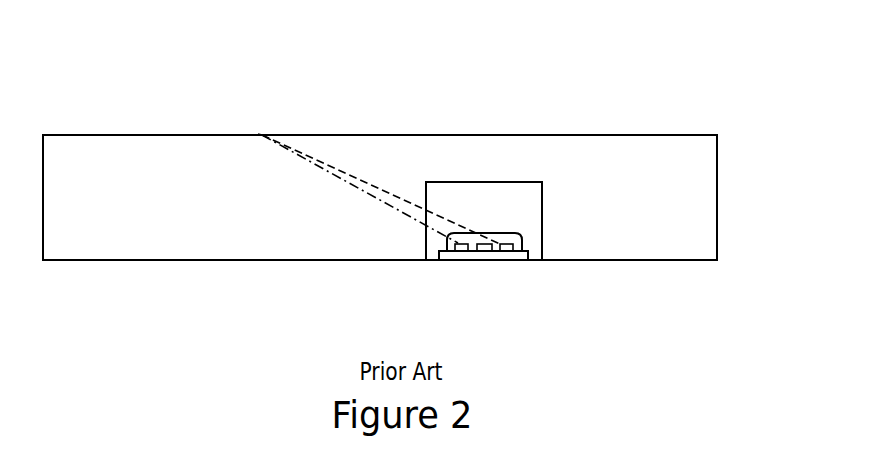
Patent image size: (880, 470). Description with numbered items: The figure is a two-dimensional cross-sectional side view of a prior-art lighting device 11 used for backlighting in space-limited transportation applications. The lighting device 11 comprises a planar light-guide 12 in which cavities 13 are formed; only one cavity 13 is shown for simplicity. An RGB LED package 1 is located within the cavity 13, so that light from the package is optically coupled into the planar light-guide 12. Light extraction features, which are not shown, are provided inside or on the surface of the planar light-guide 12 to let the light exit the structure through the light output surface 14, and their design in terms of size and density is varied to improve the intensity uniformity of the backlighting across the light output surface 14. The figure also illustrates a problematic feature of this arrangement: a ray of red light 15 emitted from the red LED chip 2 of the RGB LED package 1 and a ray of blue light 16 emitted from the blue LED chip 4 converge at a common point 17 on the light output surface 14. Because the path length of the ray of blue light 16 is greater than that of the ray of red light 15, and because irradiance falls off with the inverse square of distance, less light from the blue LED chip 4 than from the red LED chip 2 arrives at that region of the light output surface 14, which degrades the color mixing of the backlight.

The RGB LED package 1 is at (510, 260).
The red LED chip 2 is at (462, 252).
The blue LED chip 4 is at (508, 252).
The lighting device 11 is at (712, 69).
The planar light-guide 12 is at (88, 152).
The cavity 13 is at (497, 193).
The light output surface 14 is at (145, 135).
The ray of red light 15 is at (368, 185).
The ray of blue light 16 is at (360, 165).
The common point 17 is at (260, 135).